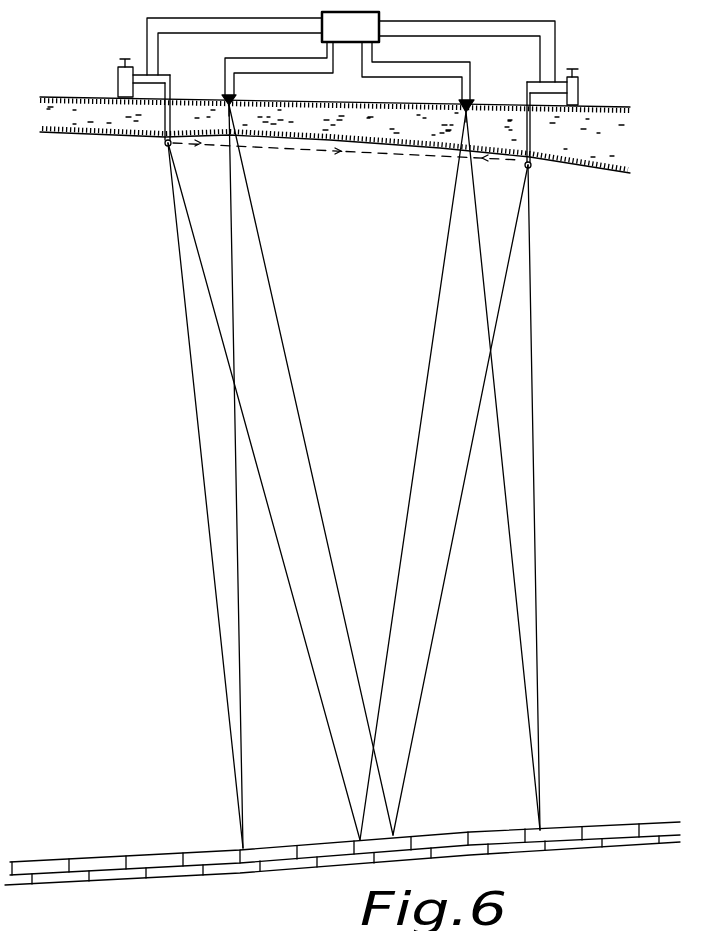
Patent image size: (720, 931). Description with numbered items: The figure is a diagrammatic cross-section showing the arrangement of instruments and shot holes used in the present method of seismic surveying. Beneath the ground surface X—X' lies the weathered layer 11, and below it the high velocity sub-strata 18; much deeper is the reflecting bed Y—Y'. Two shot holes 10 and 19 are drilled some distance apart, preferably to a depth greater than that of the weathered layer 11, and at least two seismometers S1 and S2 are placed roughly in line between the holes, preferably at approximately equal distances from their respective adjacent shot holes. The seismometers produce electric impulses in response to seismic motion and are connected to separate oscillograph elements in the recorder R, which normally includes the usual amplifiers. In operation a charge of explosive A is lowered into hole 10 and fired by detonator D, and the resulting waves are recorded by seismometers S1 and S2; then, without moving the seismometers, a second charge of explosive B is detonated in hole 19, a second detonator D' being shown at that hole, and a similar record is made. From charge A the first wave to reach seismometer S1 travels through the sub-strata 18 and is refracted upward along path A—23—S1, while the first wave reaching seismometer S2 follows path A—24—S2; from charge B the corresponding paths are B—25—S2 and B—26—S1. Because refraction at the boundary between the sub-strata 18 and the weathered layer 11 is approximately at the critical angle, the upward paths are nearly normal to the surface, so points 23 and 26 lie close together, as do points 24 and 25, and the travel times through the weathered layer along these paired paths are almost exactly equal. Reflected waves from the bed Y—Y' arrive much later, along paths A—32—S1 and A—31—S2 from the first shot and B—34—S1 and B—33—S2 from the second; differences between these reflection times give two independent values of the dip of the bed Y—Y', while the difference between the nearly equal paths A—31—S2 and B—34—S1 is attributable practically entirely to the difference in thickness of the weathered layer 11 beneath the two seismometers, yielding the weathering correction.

The shot hole 10 is at (173, 108).
The weathered layer 11 is at (333, 112).
The high velocity sub-strata 18 is at (363, 177).
The shot hole 19 is at (522, 112).
The refraction point 23 is at (228, 145).
The refraction point 24 is at (458, 158).
The refraction point 25 is at (472, 156).
The refraction point 26 is at (236, 132).
The reflection point 31 is at (359, 839).
The reflection point 32 is at (245, 846).
The reflection point 33 is at (542, 829).
The reflection point 34 is at (395, 834).
The charge of explosive A is at (164, 145).
The charge of explosive B is at (531, 168).
The detonator D is at (125, 71).
The detonator D' is at (570, 81).
The recorder R is at (351, 56).
The seismometer S1 is at (237, 97).
The seismometer S2 is at (460, 100).
The ground surface line X is at (53, 85).
The ground surface line X' is at (640, 95).
The reflecting bed Y is at (342, 853).
The reflecting bed Y' is at (659, 810).